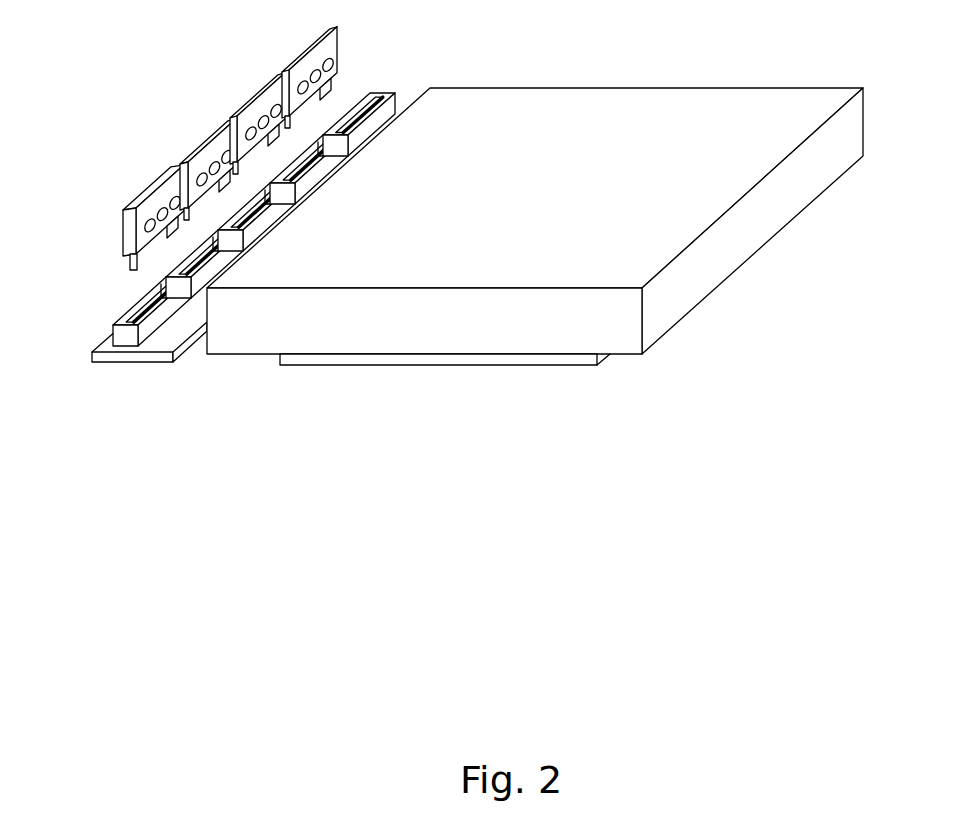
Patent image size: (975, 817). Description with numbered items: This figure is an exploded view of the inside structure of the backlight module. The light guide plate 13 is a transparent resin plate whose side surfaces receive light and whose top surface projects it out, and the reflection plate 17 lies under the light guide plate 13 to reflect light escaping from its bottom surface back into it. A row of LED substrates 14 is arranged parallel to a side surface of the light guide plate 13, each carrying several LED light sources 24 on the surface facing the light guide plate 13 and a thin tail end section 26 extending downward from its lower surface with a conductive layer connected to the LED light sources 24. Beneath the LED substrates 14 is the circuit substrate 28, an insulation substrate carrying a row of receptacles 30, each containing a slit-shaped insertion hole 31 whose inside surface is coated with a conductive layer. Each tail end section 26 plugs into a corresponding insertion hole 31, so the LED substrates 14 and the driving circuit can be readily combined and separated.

The light guide plate 13 is at (702, 264).
The LED substrate 14 is at (197, 148).
The reflection plate 17 is at (522, 363).
The LED light sources 24 is at (144, 185).
The tail end section 26 is at (99, 248).
The circuit substrate 28 is at (158, 358).
The receptacles 30 is at (216, 231).
The insertion hole 31 is at (145, 312).